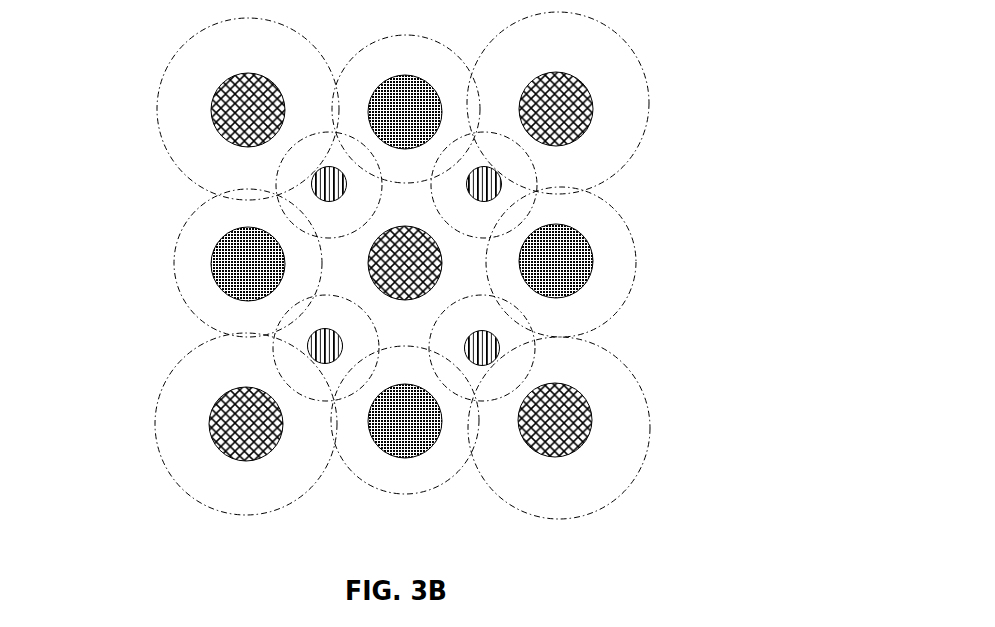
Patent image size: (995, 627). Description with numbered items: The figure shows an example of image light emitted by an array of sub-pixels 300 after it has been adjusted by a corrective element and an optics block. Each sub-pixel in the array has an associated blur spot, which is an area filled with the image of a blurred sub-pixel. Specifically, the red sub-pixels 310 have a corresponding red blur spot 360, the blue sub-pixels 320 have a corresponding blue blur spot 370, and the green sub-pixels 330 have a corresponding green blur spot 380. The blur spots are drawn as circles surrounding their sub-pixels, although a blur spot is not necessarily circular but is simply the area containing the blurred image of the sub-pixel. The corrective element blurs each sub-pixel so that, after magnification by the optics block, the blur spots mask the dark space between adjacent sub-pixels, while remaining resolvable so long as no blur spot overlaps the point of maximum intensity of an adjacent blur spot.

The array of sub-pixels 300 is at (79, 46).
The red sub-pixels 310 is at (212, 102).
The blue sub-pixels 320 is at (217, 258).
The green sub-pixels 330 is at (307, 347).
The red blur spot 360 is at (576, 15).
The blue blur spot 370 is at (620, 217).
The green blur spot 380 is at (533, 356).